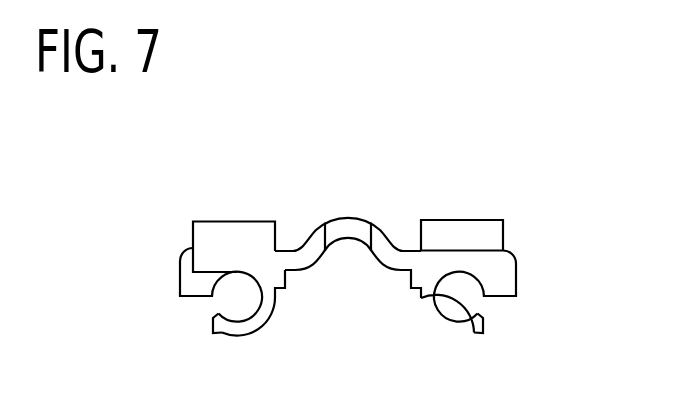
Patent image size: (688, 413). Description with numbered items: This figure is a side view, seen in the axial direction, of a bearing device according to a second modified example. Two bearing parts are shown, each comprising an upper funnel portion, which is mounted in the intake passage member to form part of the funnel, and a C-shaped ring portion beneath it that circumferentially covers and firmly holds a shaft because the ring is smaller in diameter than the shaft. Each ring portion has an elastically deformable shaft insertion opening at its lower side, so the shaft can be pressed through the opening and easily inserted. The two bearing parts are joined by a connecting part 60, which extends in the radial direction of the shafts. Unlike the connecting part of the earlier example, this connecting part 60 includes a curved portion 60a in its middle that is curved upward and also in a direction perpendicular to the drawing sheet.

The connecting part 60 is at (378, 237).
The curved portion 60a is at (348, 218).